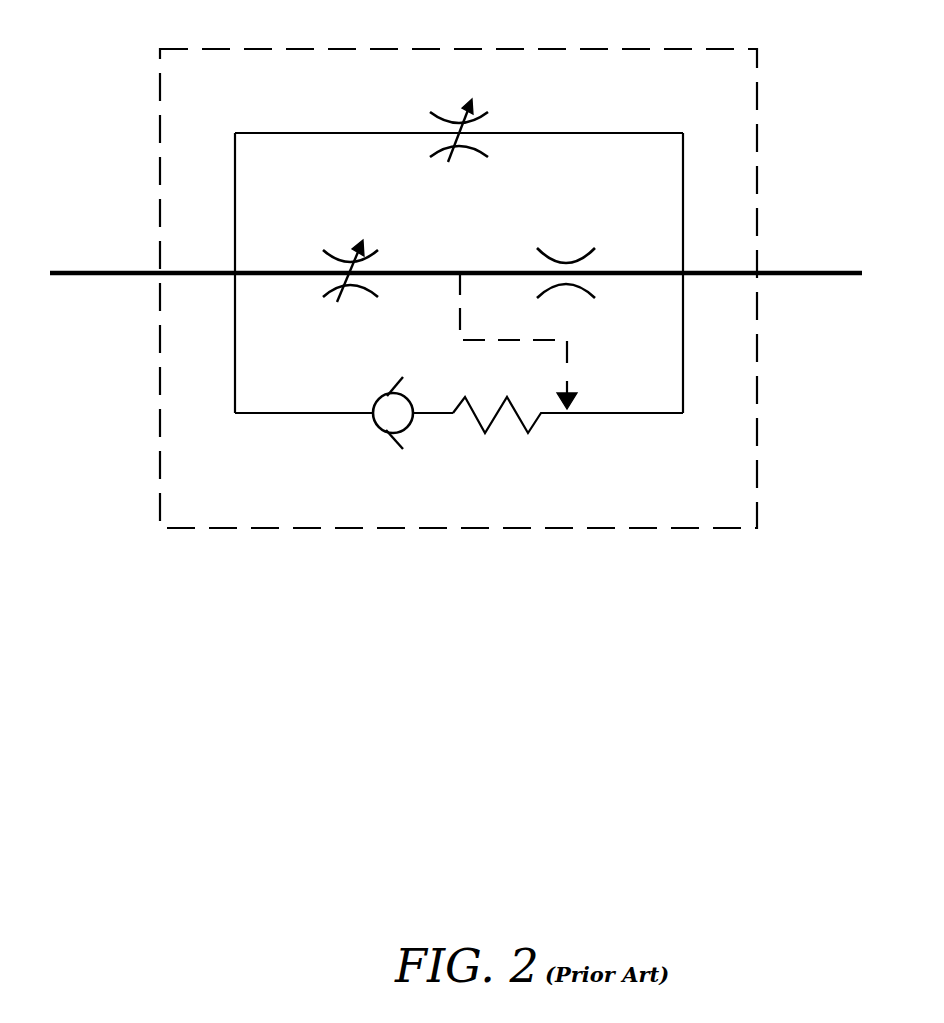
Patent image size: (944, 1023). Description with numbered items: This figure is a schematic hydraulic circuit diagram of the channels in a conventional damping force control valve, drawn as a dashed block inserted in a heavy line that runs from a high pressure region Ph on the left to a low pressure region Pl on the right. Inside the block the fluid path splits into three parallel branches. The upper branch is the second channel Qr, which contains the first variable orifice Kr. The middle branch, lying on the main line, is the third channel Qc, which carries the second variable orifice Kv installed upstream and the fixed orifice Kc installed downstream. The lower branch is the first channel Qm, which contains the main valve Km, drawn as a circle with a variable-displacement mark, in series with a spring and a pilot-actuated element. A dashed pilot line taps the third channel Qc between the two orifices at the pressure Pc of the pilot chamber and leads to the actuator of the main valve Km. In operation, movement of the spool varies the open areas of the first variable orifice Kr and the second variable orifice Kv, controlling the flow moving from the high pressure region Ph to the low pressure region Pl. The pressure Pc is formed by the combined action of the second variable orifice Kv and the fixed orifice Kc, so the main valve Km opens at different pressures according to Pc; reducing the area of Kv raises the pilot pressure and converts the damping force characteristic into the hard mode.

The first variable orifice Kr is at (459, 110).
The second variable orifice Kv is at (350, 249).
The fixed orifice Kc is at (566, 248).
The main valve Km is at (398, 433).
The second channel Qr is at (459, 116).
The third channel Qc is at (459, 257).
The first channel Qm is at (459, 423).
The pressure of the pilot chamber Pc is at (507, 324).
The high pressure region Ph is at (142, 253).
The low pressure region Pl is at (772, 253).